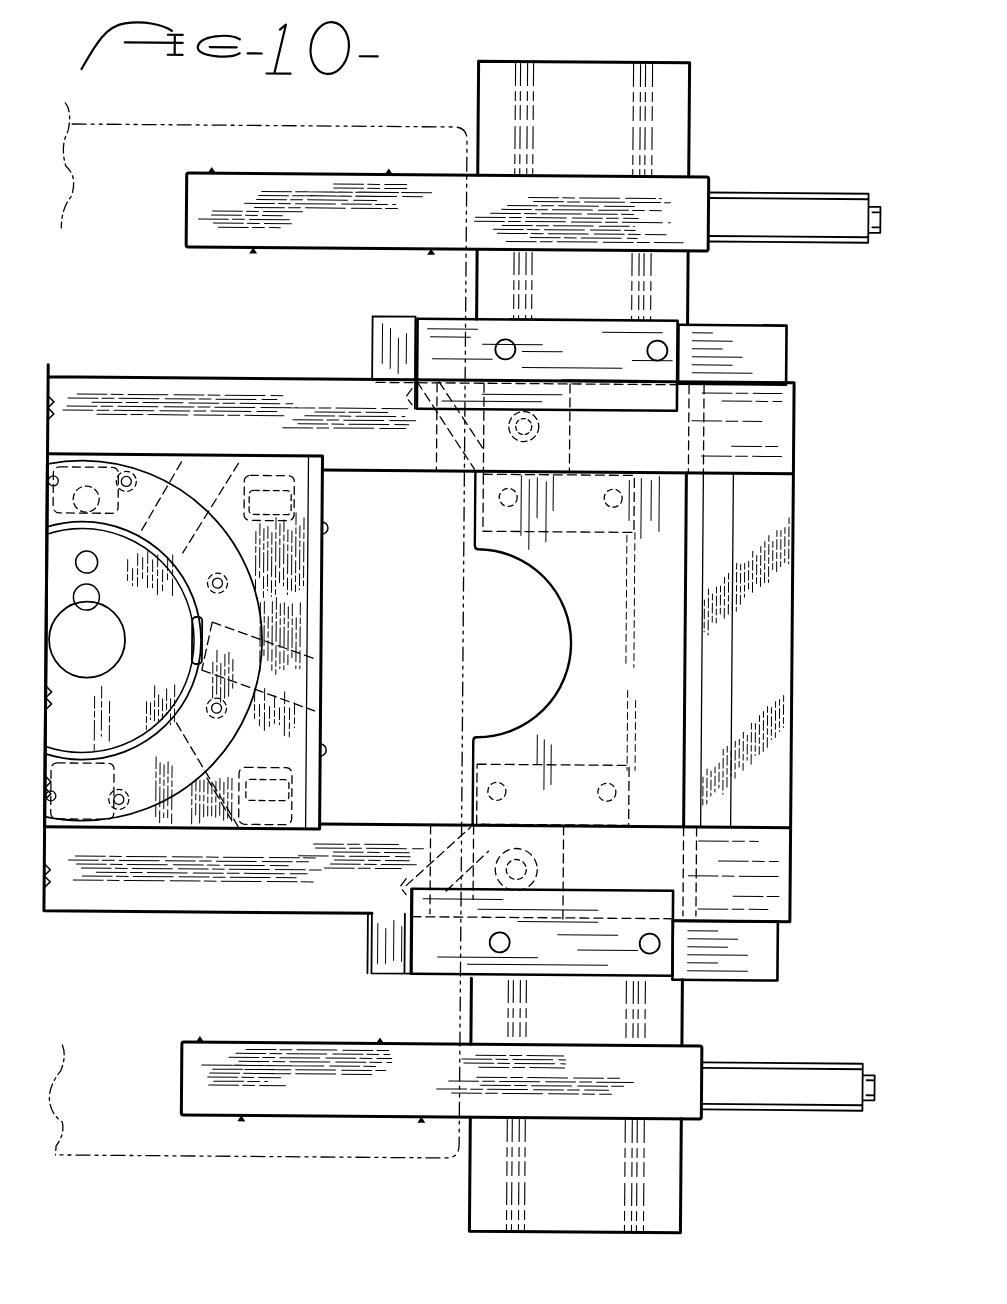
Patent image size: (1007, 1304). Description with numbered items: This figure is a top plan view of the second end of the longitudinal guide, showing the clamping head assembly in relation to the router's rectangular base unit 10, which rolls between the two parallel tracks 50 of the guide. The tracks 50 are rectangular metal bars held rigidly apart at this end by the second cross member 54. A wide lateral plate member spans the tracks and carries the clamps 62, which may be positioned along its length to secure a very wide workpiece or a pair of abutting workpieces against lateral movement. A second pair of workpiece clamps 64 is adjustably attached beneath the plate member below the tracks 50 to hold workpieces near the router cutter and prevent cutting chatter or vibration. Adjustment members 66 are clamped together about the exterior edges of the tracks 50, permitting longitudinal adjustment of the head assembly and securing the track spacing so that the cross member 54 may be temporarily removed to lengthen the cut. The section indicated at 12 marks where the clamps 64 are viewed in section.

The rectangular base unit 10 is at (322, 626).
The section line 12- 12 is at (765, 502).
The parallel tracks 50 is at (140, 378).
The second cross member 54 is at (795, 644).
The clamps 62 is at (214, 248).
The workpiece clamps 64 is at (548, 850).
The adjustment members 66 is at (432, 316).